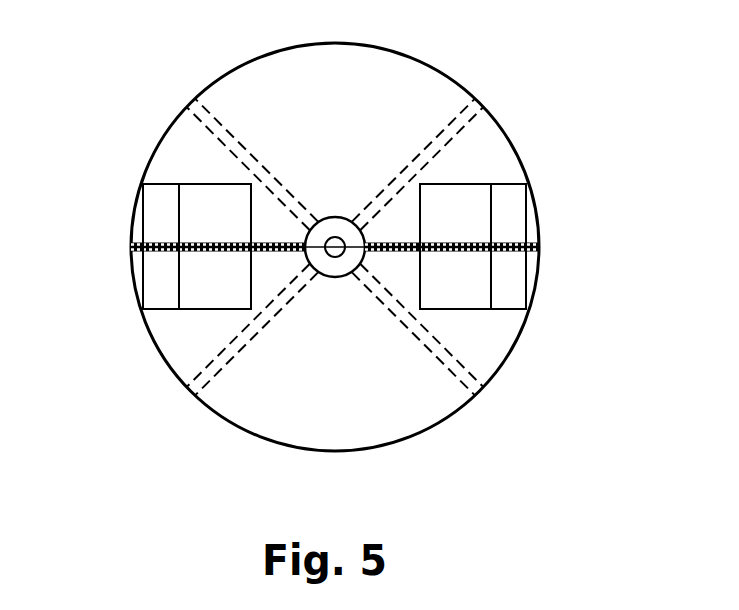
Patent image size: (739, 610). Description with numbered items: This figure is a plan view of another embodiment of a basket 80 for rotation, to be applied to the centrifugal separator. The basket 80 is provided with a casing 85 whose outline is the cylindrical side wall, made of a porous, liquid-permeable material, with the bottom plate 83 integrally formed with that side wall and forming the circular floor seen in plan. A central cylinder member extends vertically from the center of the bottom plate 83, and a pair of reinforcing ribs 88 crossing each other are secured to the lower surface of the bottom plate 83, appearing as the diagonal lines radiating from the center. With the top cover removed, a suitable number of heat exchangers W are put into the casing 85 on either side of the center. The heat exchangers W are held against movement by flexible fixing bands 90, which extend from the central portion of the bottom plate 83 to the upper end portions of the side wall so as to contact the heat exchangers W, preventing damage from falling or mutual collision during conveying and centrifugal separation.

The basket 80 is at (336, 253).
The bottom plate 83 is at (322, 427).
The casing 85 is at (536, 140).
The reinforcing ribs 88 is at (203, 397).
The flexible fixing bands 90 is at (507, 258).
The heat exchangers W is at (161, 258).